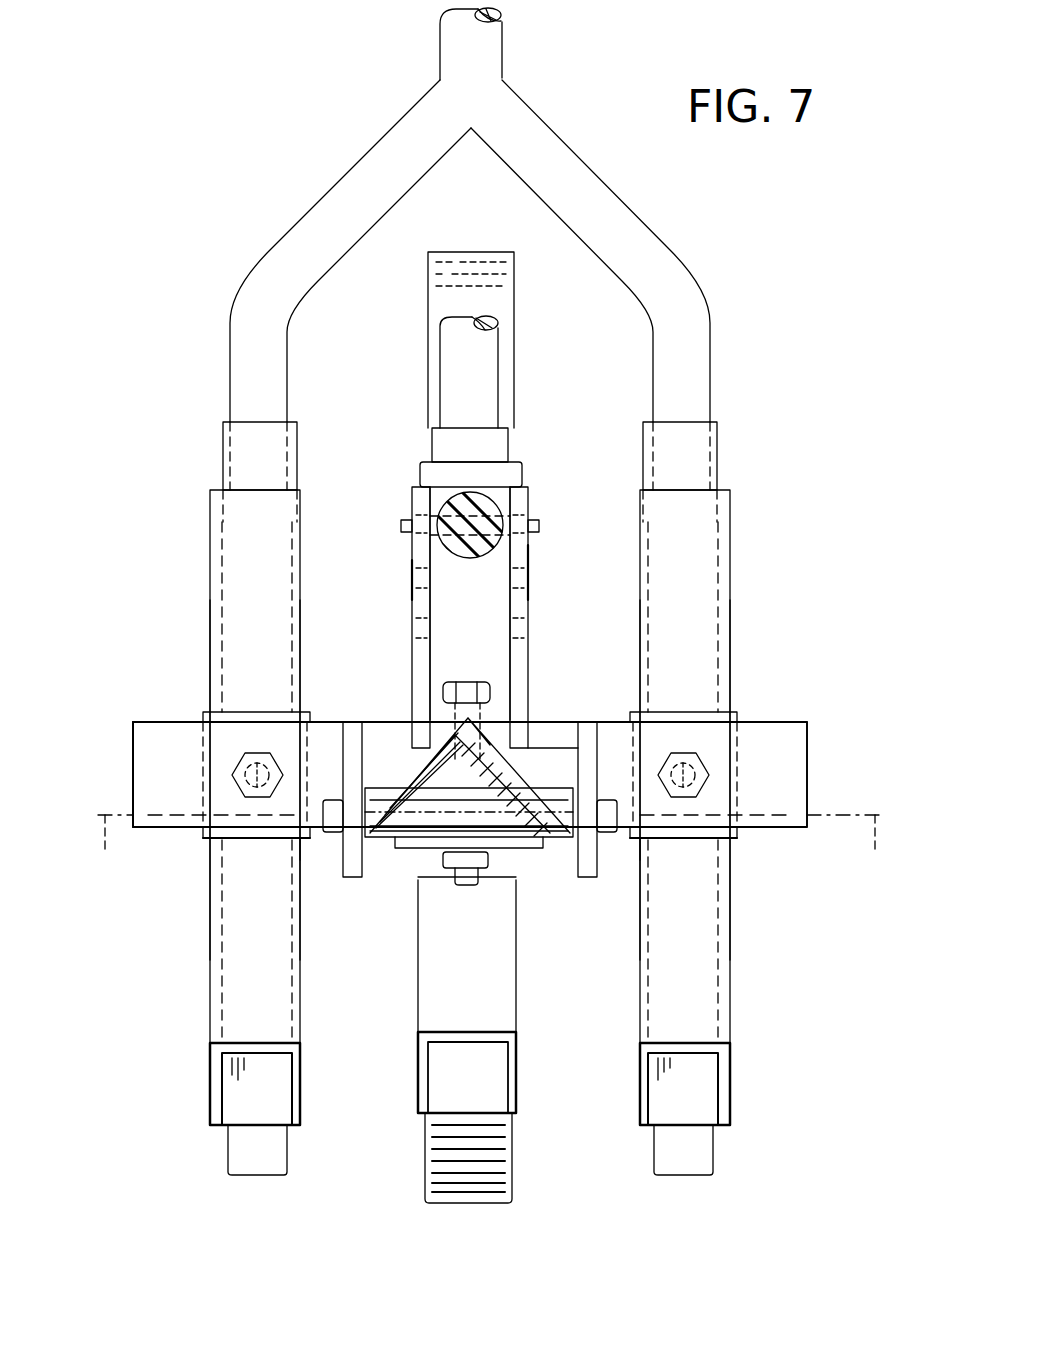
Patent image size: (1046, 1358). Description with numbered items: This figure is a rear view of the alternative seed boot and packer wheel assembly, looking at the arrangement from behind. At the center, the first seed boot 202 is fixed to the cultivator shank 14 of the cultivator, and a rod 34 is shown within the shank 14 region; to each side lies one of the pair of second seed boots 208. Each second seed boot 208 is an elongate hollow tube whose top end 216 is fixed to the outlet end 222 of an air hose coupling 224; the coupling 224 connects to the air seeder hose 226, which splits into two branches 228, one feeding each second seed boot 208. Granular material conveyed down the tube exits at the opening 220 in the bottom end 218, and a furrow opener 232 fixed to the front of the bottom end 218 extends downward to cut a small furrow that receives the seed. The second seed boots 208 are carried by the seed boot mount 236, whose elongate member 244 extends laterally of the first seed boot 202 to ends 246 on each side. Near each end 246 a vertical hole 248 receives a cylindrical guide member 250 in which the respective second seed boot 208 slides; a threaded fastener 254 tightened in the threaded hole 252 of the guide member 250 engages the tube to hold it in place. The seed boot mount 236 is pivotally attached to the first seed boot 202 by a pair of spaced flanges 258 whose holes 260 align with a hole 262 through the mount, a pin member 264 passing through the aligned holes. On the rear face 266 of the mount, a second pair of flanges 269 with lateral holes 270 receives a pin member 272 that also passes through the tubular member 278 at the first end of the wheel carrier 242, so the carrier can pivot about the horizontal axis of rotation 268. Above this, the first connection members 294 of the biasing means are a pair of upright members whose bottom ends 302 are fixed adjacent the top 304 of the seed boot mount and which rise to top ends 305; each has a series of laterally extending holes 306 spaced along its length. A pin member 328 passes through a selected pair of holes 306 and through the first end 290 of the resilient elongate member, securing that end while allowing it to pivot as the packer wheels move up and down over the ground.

The cultivator shank 14 is at (445, 275).
The rod 34 is at (455, 368).
The first seed boot 202 is at (512, 968).
The second seed boot 208 is at (212, 592).
The top end 216 is at (212, 498).
The bottom end 218 is at (302, 1115).
The opening 220 is at (248, 1080).
The outlet end 222 is at (248, 490).
The air hose coupling 224 is at (233, 440).
The air seeder hose 226 is at (440, 50).
The branch 228 is at (235, 302).
The furrow opener 232 is at (245, 1148).
The seed boot mount 236 is at (802, 726).
The wheel carrier 242 is at (352, 875).
The elongate member 244 is at (808, 728).
The end 246 is at (135, 736).
The hole 248 is at (215, 735).
The guide member 250 is at (208, 840).
The threaded hole 252 is at (240, 768).
The threaded fastener 254 is at (240, 790).
The flange 258 is at (600, 745).
The hole 260 is at (440, 690).
The hole 262 is at (320, 722).
The pin member 264 is at (472, 685).
The rear face 266 is at (178, 740).
The axis of rotation 268 is at (490, 841).
The flange 269 is at (295, 862).
The hole 270 is at (290, 798).
The pin member 272 is at (338, 830).
The tubular member 278 is at (470, 884).
The first end 290 is at (478, 495).
The first connection member 294 is at (530, 553).
The bottom end 302 is at (410, 717).
The top 304 is at (562, 708).
The top end 305 is at (420, 495).
The hole 306 is at (405, 522).
The pin member 328 is at (410, 545).